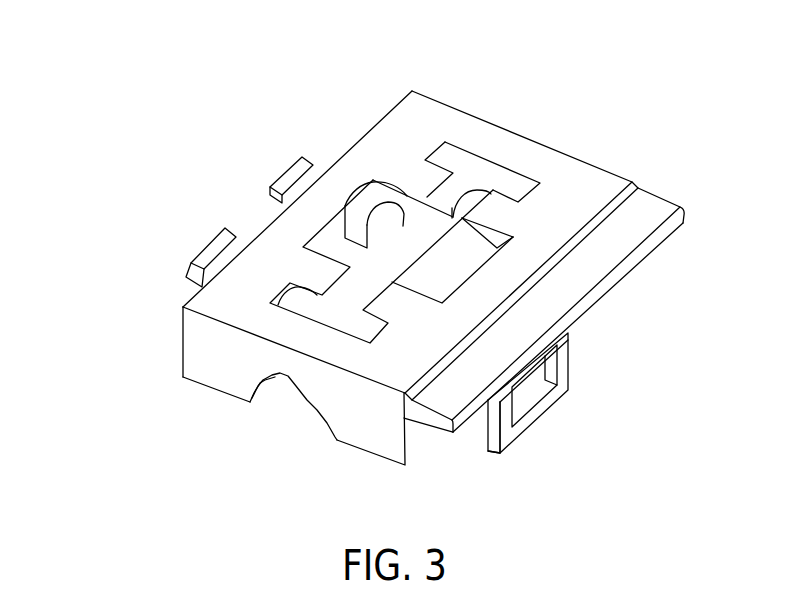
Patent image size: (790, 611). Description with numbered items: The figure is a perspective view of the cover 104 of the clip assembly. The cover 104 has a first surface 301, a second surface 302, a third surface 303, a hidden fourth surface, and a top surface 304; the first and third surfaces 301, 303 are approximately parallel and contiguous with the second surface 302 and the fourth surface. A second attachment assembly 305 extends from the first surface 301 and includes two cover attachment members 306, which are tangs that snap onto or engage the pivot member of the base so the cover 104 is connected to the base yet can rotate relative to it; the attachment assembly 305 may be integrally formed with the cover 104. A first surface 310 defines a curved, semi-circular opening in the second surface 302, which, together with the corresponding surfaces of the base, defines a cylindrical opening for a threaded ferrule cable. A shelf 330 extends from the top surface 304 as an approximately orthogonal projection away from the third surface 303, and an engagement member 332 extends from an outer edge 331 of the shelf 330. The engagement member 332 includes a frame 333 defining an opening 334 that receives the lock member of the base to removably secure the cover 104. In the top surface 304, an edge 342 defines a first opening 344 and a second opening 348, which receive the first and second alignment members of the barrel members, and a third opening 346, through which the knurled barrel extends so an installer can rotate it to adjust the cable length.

The cover 104 is at (590, 105).
The first surface 301 is at (180, 312).
The second surface 302 is at (228, 362).
The third surface 303 is at (418, 440).
The top surface 304 is at (412, 127).
The second attachment assembly 305 is at (266, 105).
The cover attachment members 306 is at (284, 182).
The first surface 310 is at (320, 403).
The shelf 330 is at (657, 207).
The outer edge 331 is at (592, 307).
The engagement member 332 is at (590, 368).
The frame 333 is at (508, 437).
The opening 334 is at (530, 380).
The edge 342 is at (512, 167).
The first opening 344 is at (466, 177).
The third opening 346 is at (432, 247).
The second opening 348 is at (345, 312).